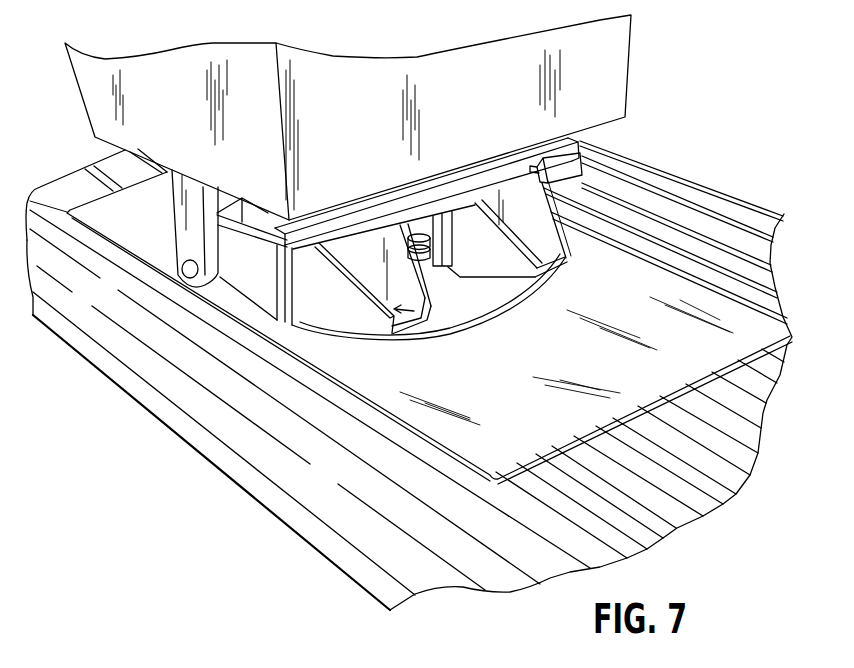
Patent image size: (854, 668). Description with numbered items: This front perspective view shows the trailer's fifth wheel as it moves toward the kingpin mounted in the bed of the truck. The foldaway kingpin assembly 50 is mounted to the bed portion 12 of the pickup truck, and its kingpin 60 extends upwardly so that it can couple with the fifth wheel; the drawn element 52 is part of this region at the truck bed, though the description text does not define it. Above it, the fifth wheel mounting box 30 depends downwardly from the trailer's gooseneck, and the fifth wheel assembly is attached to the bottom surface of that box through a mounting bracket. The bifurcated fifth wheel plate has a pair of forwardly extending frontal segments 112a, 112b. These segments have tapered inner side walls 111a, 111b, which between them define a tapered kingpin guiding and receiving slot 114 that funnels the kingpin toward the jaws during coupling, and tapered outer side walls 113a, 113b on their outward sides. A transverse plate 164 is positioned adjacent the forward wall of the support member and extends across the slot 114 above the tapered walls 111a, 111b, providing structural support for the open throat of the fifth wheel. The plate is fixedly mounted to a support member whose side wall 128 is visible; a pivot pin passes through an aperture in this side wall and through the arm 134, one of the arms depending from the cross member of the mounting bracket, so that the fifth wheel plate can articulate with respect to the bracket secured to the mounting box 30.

The bed portion 12 is at (330, 495).
The fifth wheel mounting box 30 is at (340, 120).
The foldaway kingpin assembly 50 is at (658, 290).
The support plate 52 is at (147, 224).
The kingpin 60 is at (433, 222).
The tapered inner side wall 111a is at (440, 280).
The tapered inner side wall 111b is at (460, 277).
The frontal segment 112a is at (354, 335).
The frontal segment 112b is at (567, 264).
The tapered outer side wall 113a is at (354, 278).
The tapered outer side wall 113b is at (545, 270).
The kingpin guiding and receiving slot 114 is at (477, 304).
The side wall 128 is at (260, 274).
The arm 134 is at (181, 244).
The transverse plate 164 is at (328, 228).